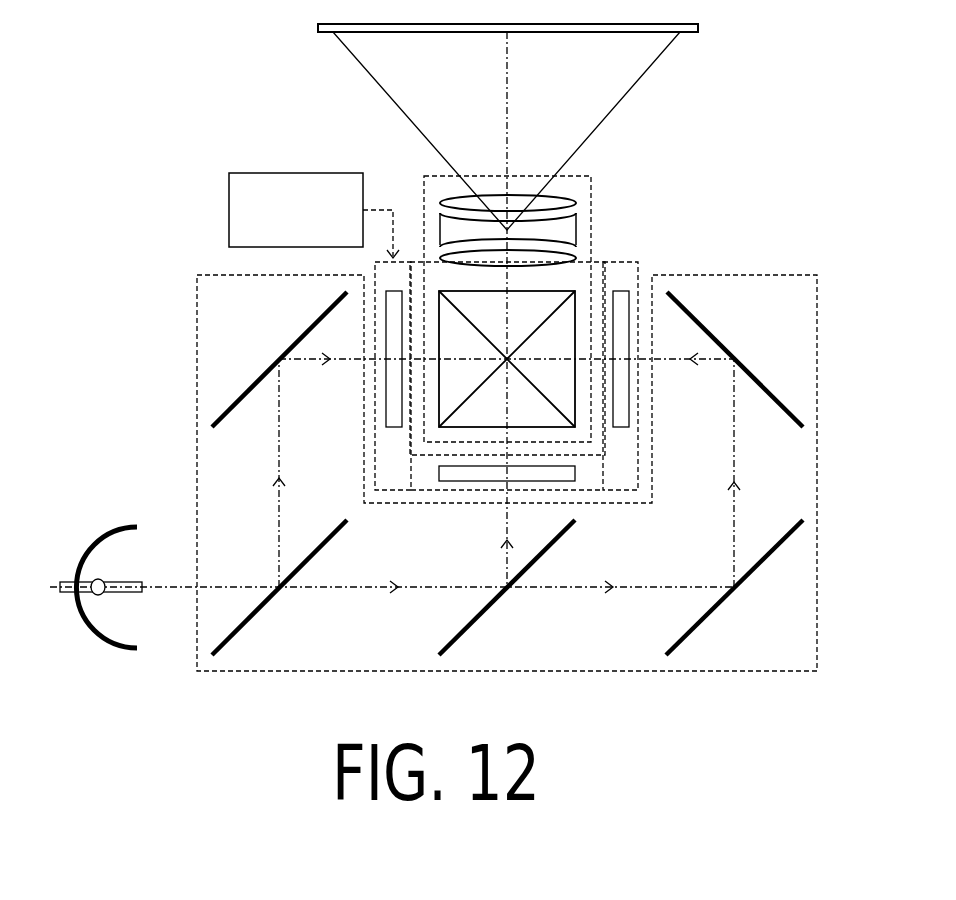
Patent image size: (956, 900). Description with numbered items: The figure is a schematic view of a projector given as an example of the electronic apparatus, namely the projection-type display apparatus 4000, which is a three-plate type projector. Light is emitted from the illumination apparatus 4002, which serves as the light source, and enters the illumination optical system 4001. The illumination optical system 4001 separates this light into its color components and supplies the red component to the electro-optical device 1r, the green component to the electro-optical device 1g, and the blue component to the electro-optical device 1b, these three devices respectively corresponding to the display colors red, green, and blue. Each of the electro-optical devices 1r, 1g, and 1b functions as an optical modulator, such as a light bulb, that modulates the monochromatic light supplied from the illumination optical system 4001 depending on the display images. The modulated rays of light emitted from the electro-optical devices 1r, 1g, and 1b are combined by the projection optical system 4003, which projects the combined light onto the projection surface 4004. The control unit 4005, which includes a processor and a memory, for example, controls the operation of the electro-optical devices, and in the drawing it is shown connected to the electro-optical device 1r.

The projection-type display apparatus 4000 is at (200, 114).
The illumination optical system 4001 is at (781, 275).
The illumination apparatus 4002 is at (115, 528).
The projection optical system 4003 is at (593, 218).
The projection surface 4004 is at (560, 32).
The control unit 4005 is at (229, 220).
The electro-optical device 1r is at (386, 412).
The electro-optical device 1g is at (440, 483).
The electro-optical device 1b is at (629, 405).